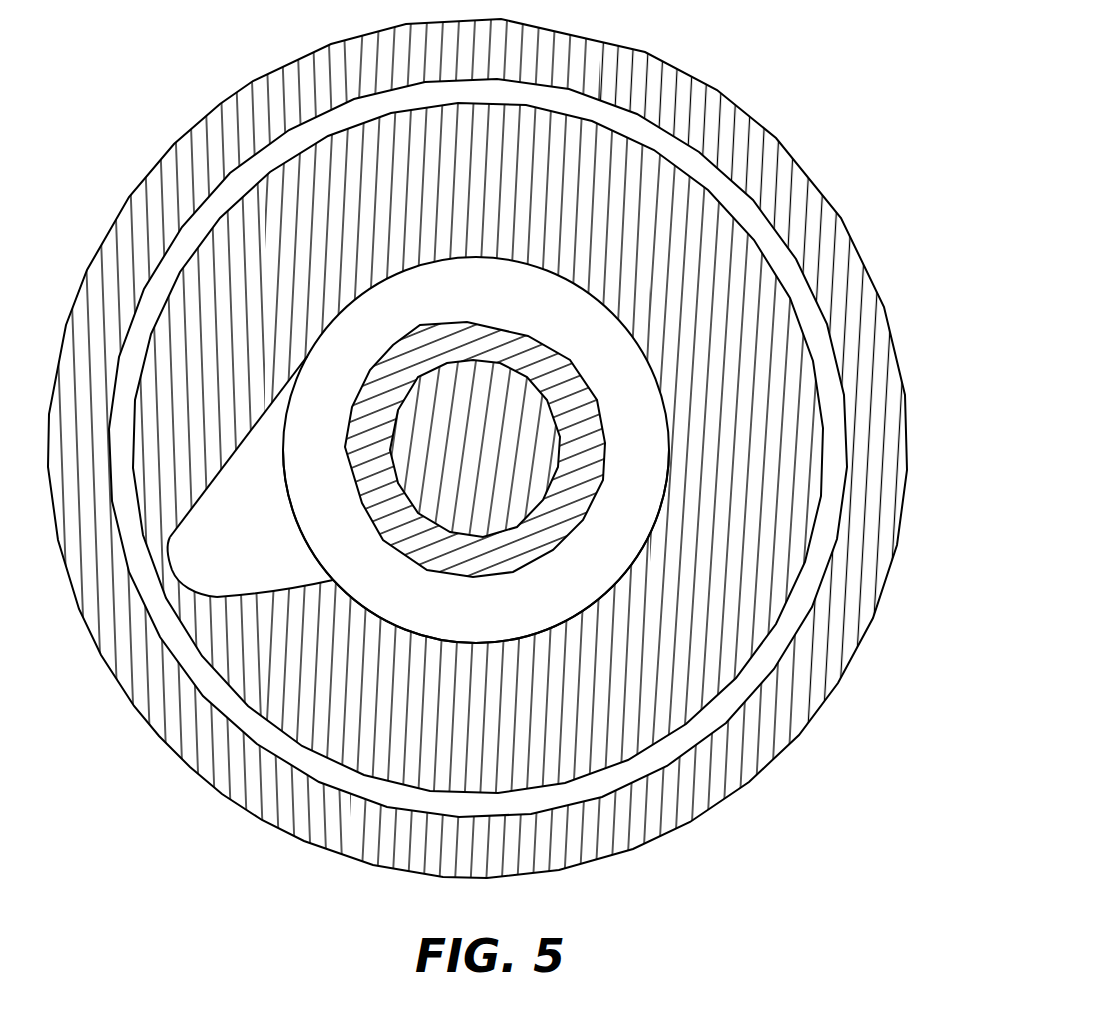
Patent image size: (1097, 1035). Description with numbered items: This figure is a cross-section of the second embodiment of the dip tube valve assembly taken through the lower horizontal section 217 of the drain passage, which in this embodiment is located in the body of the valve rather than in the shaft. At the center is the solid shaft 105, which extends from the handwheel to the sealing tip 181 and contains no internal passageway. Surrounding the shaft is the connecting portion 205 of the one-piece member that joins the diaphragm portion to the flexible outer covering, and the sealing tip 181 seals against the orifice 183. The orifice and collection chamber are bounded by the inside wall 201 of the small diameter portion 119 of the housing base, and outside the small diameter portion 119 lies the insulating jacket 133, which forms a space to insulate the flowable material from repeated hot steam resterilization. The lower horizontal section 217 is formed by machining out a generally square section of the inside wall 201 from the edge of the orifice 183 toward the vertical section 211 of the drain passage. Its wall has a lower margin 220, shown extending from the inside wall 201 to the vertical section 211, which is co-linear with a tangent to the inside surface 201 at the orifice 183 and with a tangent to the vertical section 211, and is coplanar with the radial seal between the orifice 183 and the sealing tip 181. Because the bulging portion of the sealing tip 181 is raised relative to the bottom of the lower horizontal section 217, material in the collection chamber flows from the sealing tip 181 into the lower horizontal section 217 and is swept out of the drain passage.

The insulating jacket 133 is at (623, 47).
The small diameter portion 119 is at (705, 451).
The inside wall 201 is at (417, 262).
The orifice 183 is at (420, 628).
The sealing tip 181 is at (384, 351).
The connecting portion 205 is at (546, 547).
The shaft 105 is at (510, 398).
The lower margin 220 is at (217, 477).
The vertical section 211 is at (175, 573).
The lower horizontal section 217 is at (290, 558).